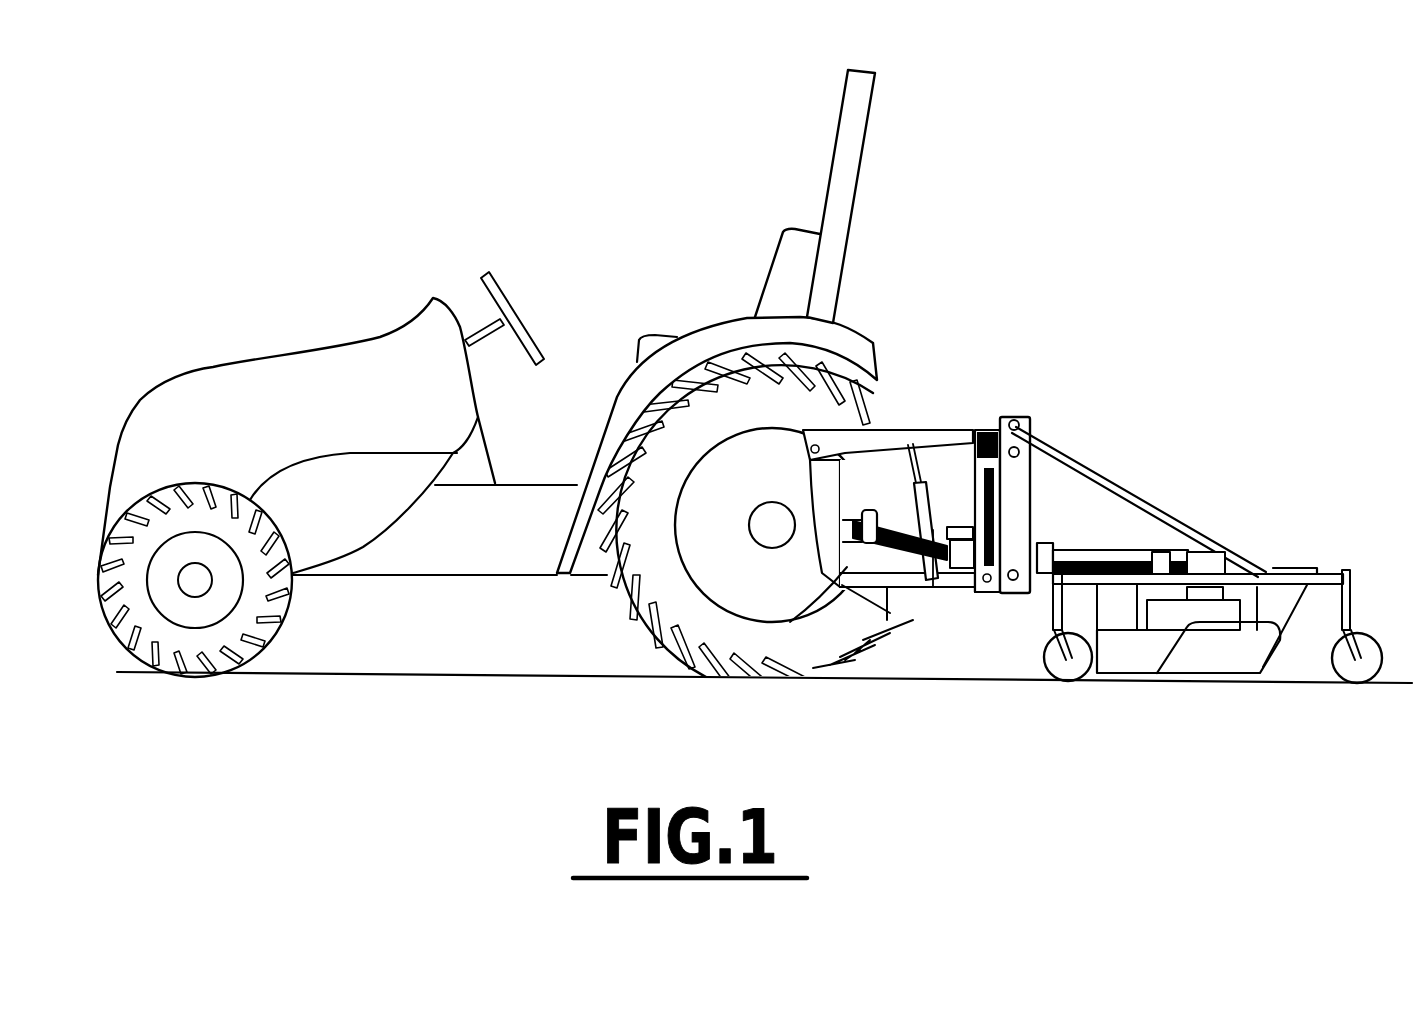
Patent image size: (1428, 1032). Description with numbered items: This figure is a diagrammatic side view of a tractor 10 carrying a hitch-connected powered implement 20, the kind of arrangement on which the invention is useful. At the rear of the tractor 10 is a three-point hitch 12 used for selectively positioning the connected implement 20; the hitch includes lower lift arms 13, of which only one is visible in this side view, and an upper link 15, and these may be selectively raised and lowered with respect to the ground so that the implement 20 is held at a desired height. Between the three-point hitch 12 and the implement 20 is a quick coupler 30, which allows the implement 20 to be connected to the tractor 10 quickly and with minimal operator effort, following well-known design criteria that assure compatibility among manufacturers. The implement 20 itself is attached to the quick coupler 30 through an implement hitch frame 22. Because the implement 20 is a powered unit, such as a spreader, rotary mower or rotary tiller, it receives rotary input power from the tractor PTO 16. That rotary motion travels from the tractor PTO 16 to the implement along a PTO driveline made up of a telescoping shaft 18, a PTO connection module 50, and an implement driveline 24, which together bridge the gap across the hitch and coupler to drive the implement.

The tractor 10 is at (384, 258).
The three-point hitch 12 is at (920, 340).
The lower lift arms 13 is at (852, 588).
The upper link 15 is at (917, 443).
The tractor PTO 16 is at (845, 590).
The telescoping shaft 18 is at (900, 562).
The implement 20 is at (1318, 525).
The implement hitch frame 22 is at (1030, 480).
The implement driveline 24 is at (1127, 552).
The quick coupler 30 is at (1028, 506).
The PTO connection module 50 is at (955, 575).